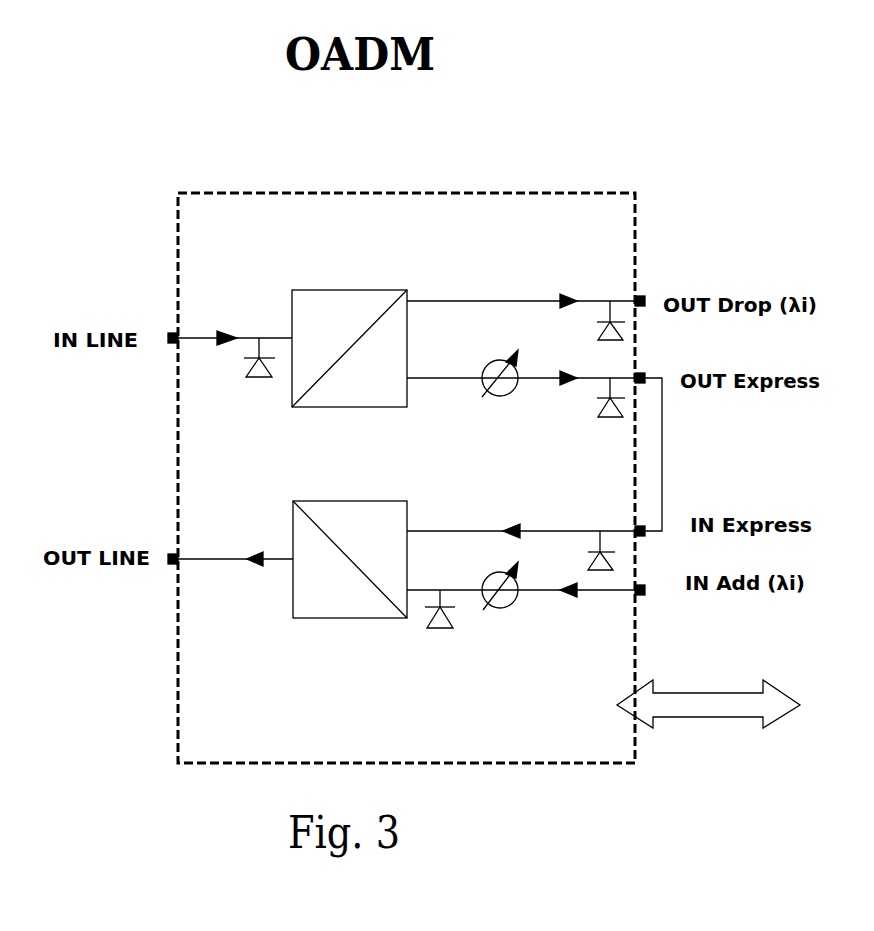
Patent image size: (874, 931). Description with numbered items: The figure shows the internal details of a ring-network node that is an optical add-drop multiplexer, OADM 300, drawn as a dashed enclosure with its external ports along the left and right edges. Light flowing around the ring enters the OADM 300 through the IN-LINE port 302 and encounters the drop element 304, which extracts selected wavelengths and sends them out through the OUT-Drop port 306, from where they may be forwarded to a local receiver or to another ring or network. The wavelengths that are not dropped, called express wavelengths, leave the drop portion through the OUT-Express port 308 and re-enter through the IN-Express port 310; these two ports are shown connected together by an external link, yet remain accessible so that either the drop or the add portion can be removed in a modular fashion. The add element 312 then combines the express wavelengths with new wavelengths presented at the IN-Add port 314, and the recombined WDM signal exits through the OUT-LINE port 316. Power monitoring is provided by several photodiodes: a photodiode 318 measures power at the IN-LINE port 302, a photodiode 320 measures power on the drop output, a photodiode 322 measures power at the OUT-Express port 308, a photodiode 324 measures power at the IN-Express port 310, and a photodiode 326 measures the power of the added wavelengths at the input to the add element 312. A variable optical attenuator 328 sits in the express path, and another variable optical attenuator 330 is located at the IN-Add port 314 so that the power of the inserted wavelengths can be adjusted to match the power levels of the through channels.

The optical add-drop multiplexer (OADM) 300 is at (453, 193).
The IN-LINE port 302 is at (184, 325).
The drop element 304 is at (368, 290).
The OUT-Drop port 306 is at (636, 290).
The OUT-Express port 308 is at (636, 365).
The IN-Express port 310 is at (636, 522).
The add element 312 is at (343, 501).
The IN-Add port 314 is at (637, 580).
The OUT-LINE port 316 is at (175, 550).
The photodiode 318 is at (250, 372).
The photodiode 320 is at (597, 322).
The photodiode 322 is at (597, 400).
The photodiode 324 is at (594, 532).
The photodiode 326 is at (427, 627).
The variable optical attenuator 328 is at (510, 415).
The variable optical attenuator 330 is at (497, 608).